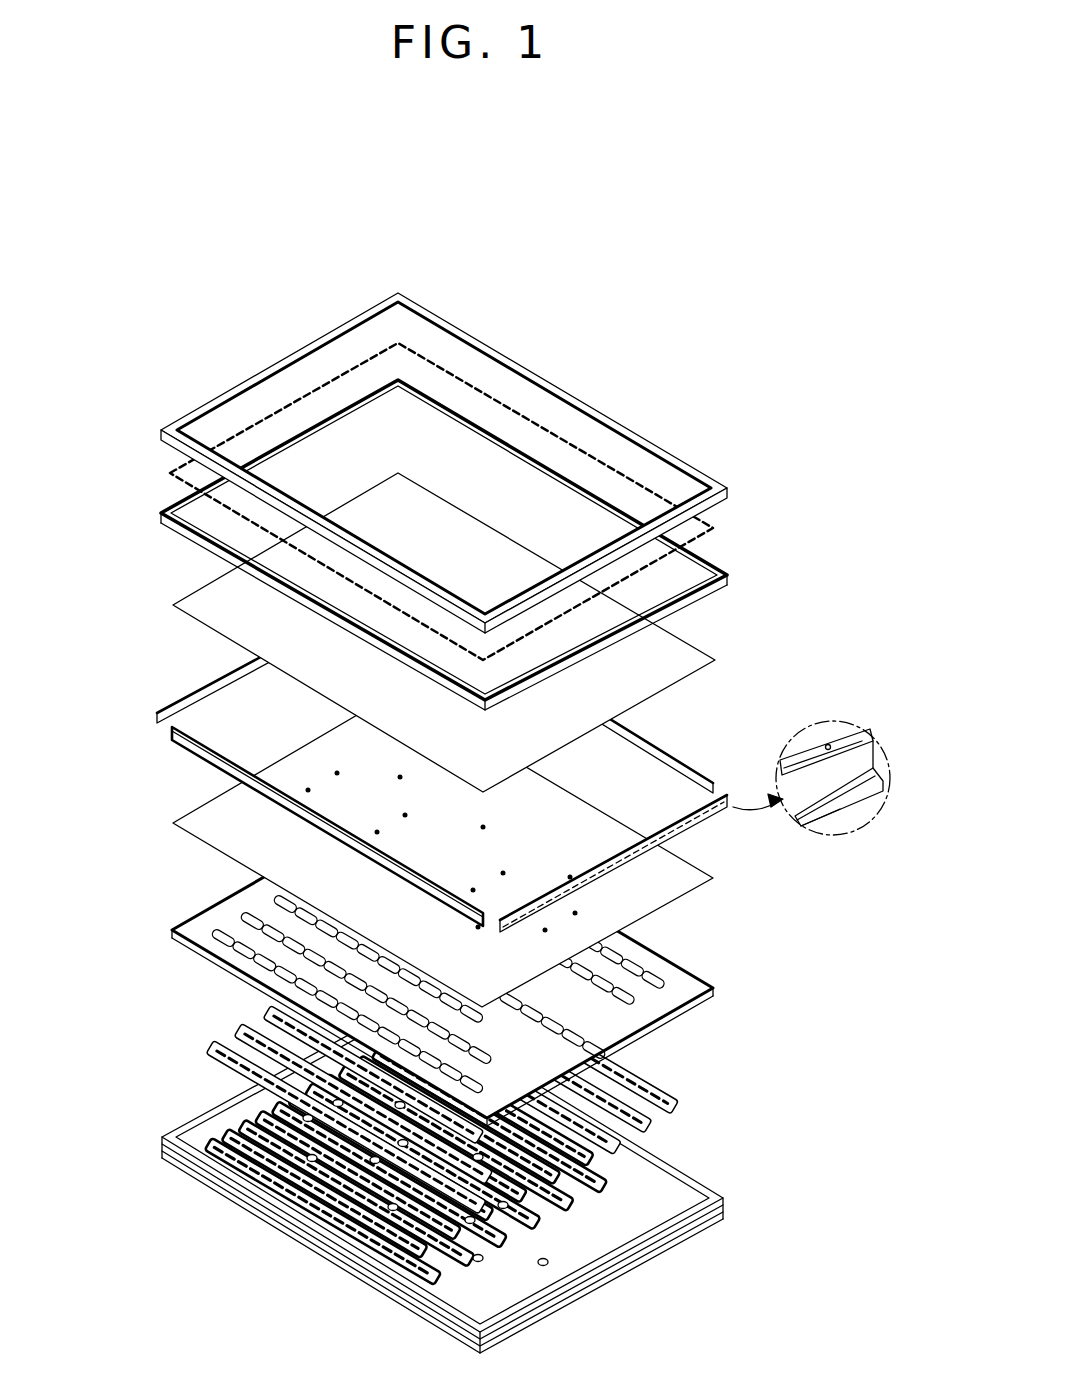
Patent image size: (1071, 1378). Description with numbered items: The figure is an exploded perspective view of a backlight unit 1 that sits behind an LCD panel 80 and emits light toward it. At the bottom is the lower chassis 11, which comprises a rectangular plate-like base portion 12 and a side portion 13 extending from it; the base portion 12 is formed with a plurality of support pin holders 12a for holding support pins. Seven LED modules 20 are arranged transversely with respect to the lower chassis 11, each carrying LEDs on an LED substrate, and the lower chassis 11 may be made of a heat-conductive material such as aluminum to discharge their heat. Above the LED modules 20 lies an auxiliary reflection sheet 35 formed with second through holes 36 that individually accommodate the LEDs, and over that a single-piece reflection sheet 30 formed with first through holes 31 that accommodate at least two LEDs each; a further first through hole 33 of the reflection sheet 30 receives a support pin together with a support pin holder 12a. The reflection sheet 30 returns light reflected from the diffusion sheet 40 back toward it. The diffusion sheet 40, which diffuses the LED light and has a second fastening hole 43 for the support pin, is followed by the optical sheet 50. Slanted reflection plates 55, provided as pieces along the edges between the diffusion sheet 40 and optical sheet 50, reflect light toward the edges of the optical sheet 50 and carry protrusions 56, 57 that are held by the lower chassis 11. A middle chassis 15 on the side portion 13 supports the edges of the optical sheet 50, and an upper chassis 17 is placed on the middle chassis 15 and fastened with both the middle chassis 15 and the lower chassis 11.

The backlight unit 1 is at (722, 331).
The lower chassis 11 is at (80, 1137).
The base portion 12 is at (177, 1160).
The support pin holder 12a is at (392, 1210).
The side portion 13 is at (160, 1141).
The middle chassis 15 is at (161, 513).
The upper chassis 17 is at (160, 431).
The LED module 20 is at (470, 1252).
The reflection sheet 30 is at (172, 930).
The first through hole 31 is at (281, 973).
The first through hole 33 is at (313, 935).
The auxiliary reflection sheet 35 is at (205, 1052).
The second through hole 36 is at (222, 1067).
The diffusion sheet 40 is at (173, 823).
The second fastening hole 43 is at (327, 827).
The optical sheet 50 is at (173, 605).
The reflection plate 55 is at (157, 716).
The protrusion 56 is at (828, 826).
The protrusion 57 is at (828, 744).
The LCD panel 80 is at (170, 473).